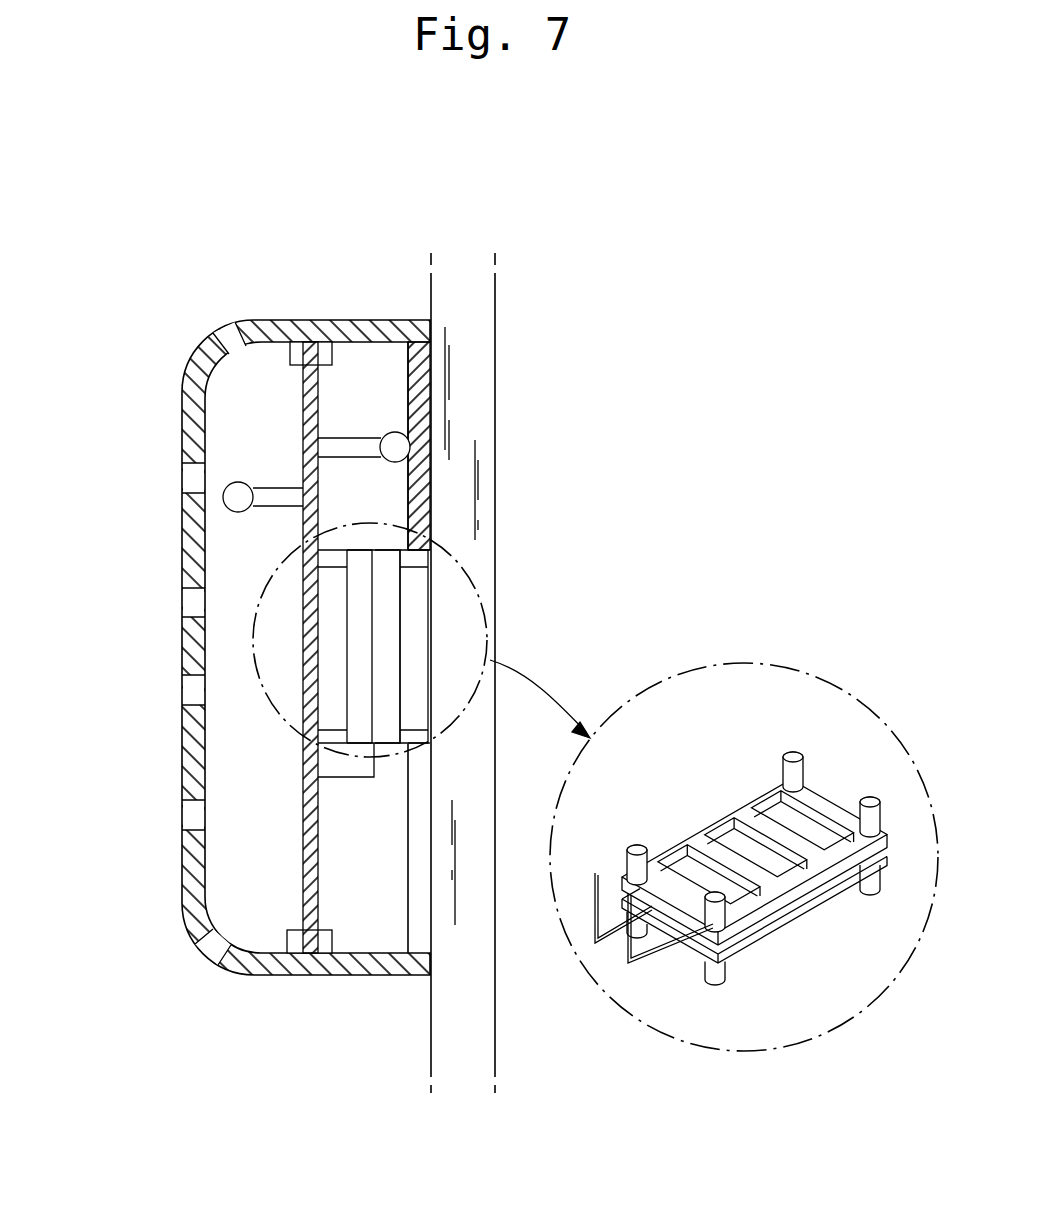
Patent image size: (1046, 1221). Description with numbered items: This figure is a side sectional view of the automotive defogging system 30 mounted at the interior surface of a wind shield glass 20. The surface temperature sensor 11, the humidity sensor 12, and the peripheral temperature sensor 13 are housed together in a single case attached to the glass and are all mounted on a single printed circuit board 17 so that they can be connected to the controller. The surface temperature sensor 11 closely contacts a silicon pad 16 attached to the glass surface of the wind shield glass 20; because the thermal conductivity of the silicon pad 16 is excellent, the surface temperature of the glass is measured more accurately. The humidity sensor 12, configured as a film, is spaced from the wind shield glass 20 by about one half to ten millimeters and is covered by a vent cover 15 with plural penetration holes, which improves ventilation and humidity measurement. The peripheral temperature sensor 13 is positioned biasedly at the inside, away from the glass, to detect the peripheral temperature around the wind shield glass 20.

The system 30 is at (147, 394).
The wind shield glass 20 is at (480, 342).
The printed circuit board 17 is at (303, 425).
The silicon pad 16 is at (412, 413).
The surface temperature sensor 11 is at (395, 450).
The peripheral temperature sensor 13 is at (236, 498).
The vent cover 15 is at (402, 612).
The humidity sensor 12 is at (372, 668).